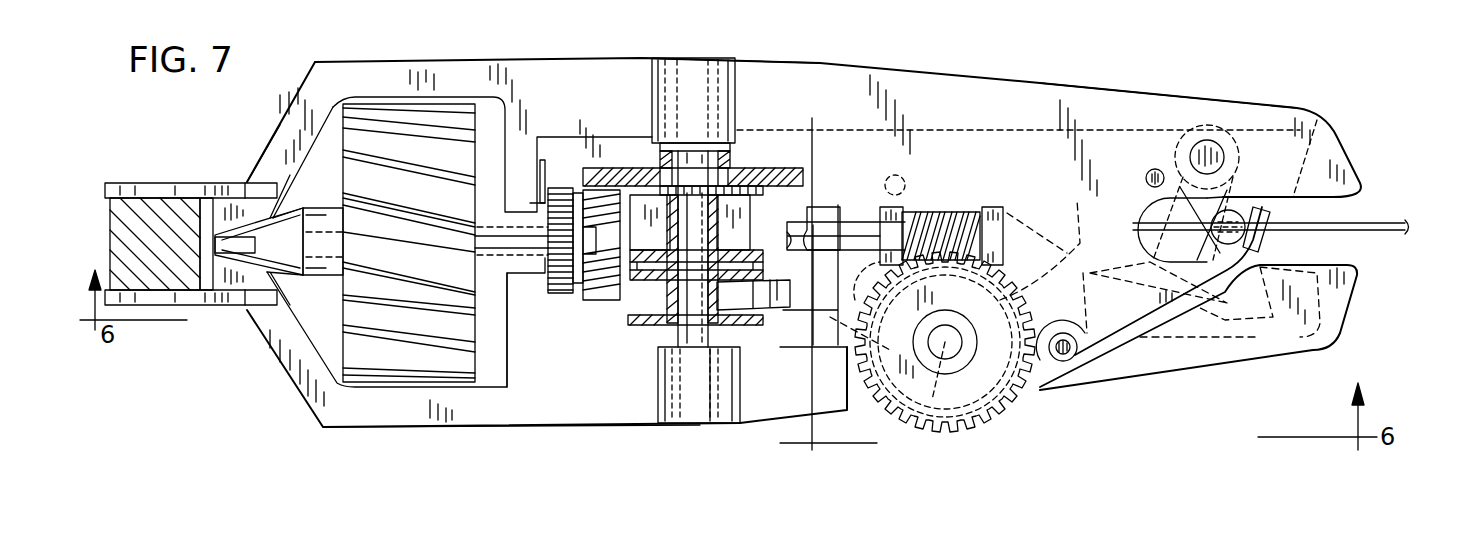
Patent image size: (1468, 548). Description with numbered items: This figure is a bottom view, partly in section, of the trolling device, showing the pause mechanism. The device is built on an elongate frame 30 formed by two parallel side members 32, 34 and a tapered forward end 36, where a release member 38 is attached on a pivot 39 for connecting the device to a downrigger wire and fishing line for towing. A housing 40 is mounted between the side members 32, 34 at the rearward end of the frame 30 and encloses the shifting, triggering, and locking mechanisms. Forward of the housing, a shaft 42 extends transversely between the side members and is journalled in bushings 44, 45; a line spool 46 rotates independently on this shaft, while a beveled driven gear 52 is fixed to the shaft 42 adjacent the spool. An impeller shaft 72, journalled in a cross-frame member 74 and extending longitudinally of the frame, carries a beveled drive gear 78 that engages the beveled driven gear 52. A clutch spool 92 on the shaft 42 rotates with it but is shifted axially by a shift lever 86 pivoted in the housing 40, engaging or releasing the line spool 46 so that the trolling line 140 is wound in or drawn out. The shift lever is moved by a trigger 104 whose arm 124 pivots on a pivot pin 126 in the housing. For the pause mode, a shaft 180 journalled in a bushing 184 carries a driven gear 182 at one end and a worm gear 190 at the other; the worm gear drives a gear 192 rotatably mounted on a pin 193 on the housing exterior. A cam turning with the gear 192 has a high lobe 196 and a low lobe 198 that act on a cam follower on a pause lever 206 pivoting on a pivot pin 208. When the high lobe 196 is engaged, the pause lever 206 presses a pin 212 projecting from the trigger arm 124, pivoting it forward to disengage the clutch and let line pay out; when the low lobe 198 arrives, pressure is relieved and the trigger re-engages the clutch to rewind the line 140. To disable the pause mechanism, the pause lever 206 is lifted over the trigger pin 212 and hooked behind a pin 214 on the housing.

The elongate frame 30 is at (278, 360).
The side member 32 is at (422, 407).
The side member 34 is at (400, 72).
The tapered forward end 36 is at (282, 120).
The release member 38 is at (160, 230).
The pivot 39 is at (182, 300).
The housing 40 is at (1103, 147).
The shaft 42 is at (740, 368).
The bushing 44 is at (723, 95).
The bushing 45 is at (740, 390).
The line spool 46 is at (663, 227).
The beveled driven gear 52 is at (620, 167).
The shaft 72 is at (527, 255).
The cross-frame member 74 is at (515, 305).
The beveled drive gear 78 is at (590, 297).
The shift lever 86 is at (790, 315).
The clutch spool 92 is at (643, 323).
The trigger 104 is at (1257, 317).
The trigger arm 124 is at (1265, 262).
The pivot pin 126 is at (1202, 143).
The trolling line 140 is at (1387, 233).
The shaft 180 is at (842, 271).
The driven gear 182 is at (560, 297).
The bushing 184 is at (870, 213).
The worm gear 190 is at (953, 213).
The gear 192 is at (907, 413).
The pin 193 is at (952, 354).
The high lobe 196 is at (1028, 262).
The low lobe 198 is at (932, 400).
The pause lever 206 is at (1152, 384).
The pivot pin 208 is at (1067, 355).
The pin 212 is at (1247, 223).
The pin 214 is at (1143, 170).